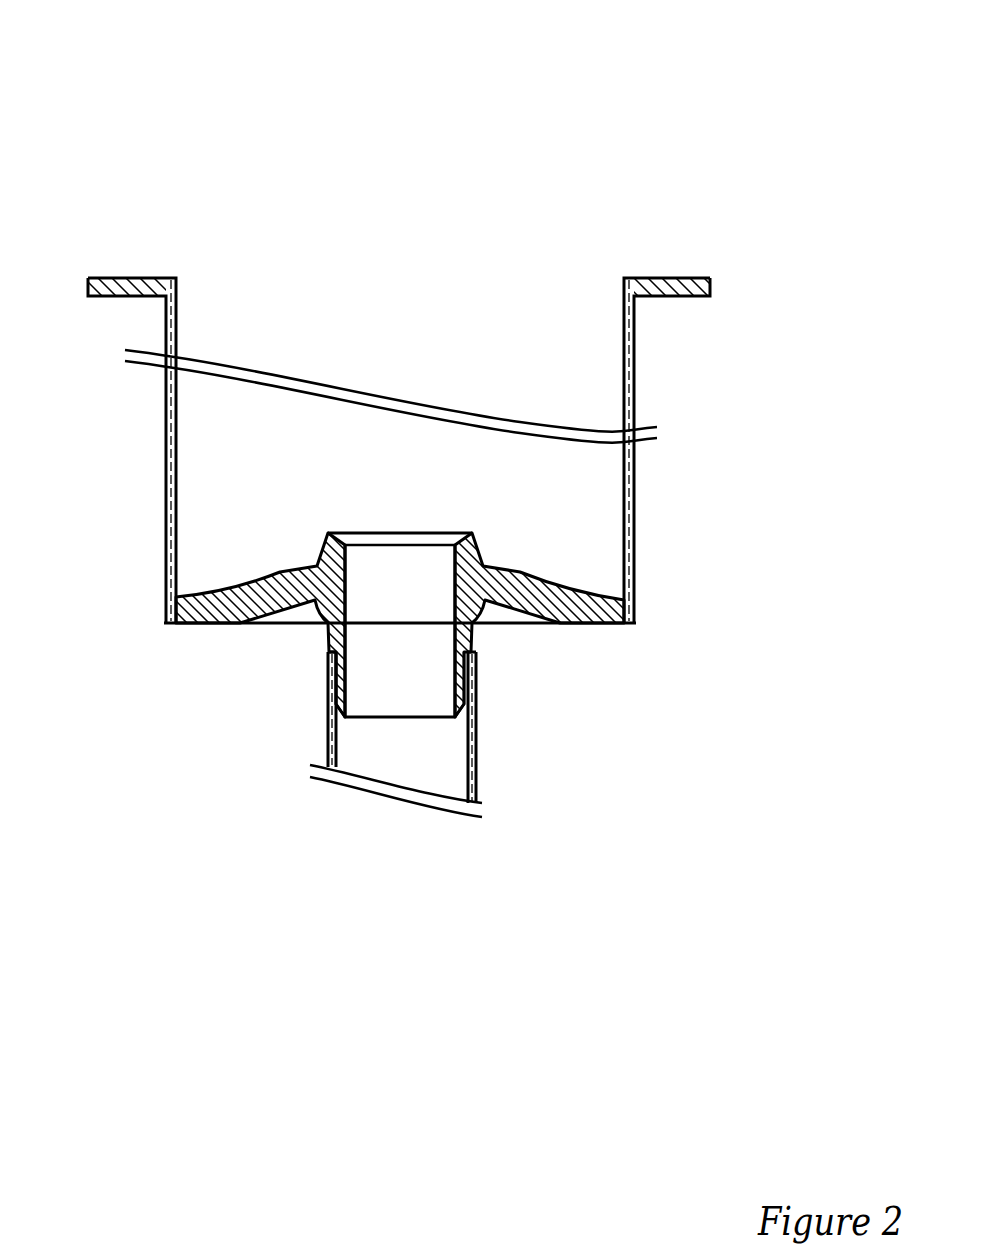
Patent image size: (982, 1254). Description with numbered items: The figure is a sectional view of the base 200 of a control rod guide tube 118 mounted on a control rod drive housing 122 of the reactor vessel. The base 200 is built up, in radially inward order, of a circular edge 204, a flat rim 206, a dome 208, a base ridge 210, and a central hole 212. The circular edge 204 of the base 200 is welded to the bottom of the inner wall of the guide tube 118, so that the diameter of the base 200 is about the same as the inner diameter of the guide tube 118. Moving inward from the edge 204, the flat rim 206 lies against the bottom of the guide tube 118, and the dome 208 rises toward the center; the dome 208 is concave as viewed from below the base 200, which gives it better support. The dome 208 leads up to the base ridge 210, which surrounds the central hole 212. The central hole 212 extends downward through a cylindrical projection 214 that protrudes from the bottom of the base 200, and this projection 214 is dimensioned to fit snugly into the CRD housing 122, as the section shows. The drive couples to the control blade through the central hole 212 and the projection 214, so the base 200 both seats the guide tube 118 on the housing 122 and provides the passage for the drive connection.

The base 200 is at (150, 70).
The control rod guide tube 118 is at (167, 455).
The CRD housing 122 is at (326, 715).
The circular edge 204 is at (637, 609).
The flat rim 206 is at (615, 598).
The dome 208 is at (262, 575).
The base ridge 210 is at (325, 545).
The central hole 212 is at (402, 563).
The cylindrical projection 214 is at (476, 665).